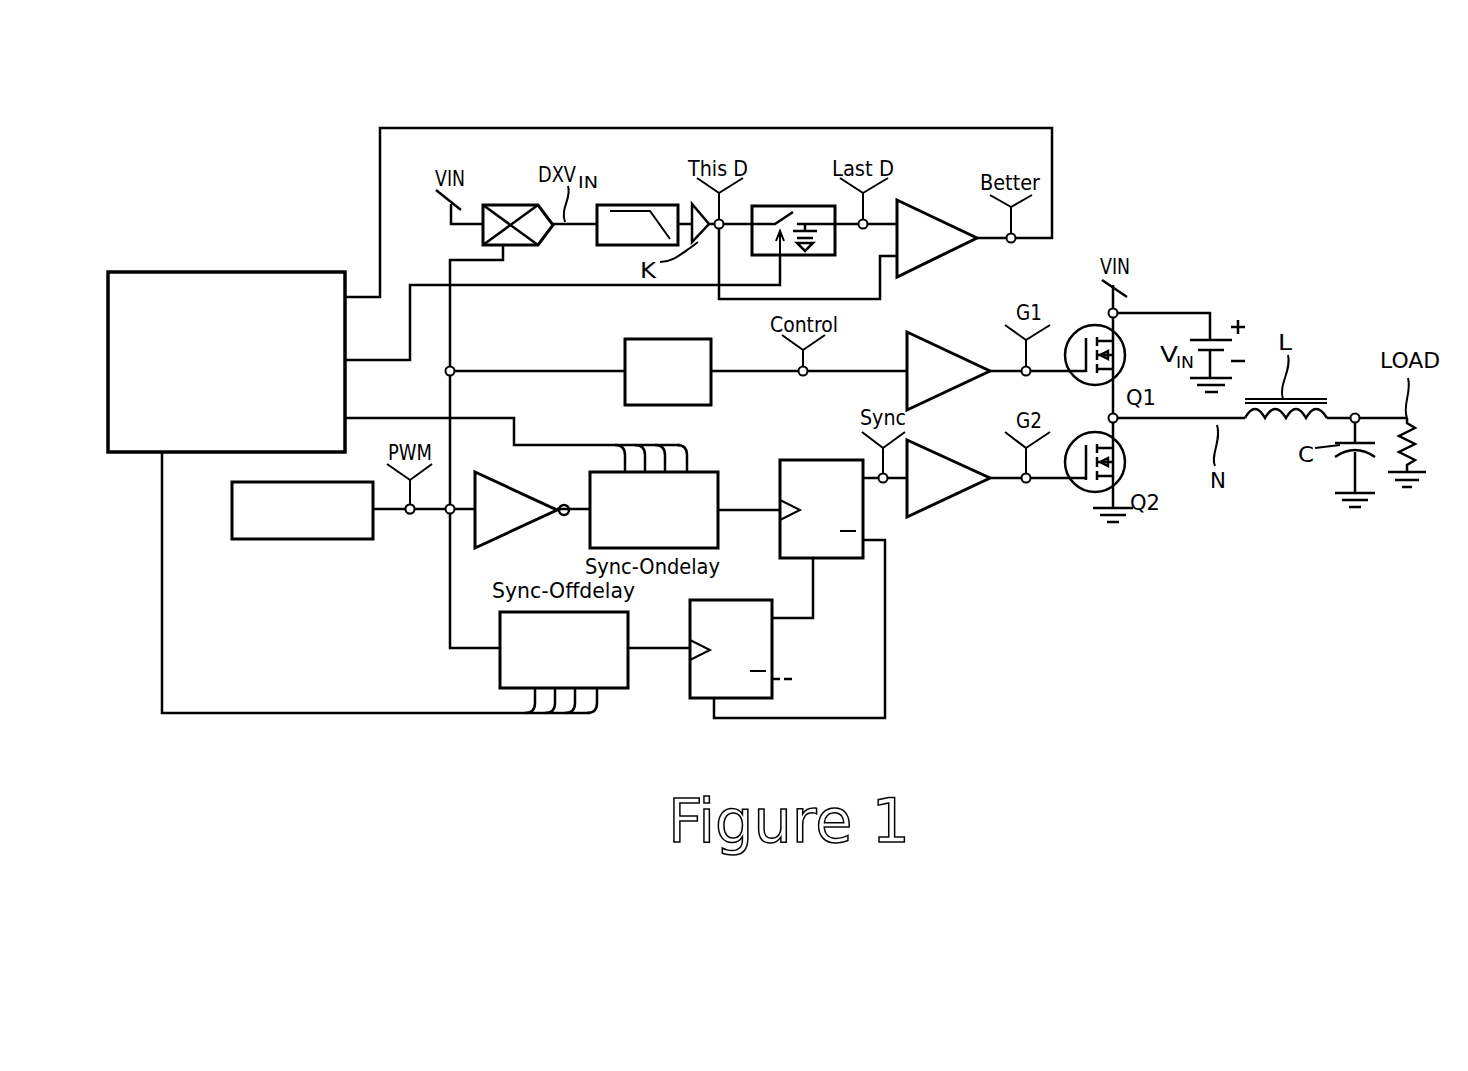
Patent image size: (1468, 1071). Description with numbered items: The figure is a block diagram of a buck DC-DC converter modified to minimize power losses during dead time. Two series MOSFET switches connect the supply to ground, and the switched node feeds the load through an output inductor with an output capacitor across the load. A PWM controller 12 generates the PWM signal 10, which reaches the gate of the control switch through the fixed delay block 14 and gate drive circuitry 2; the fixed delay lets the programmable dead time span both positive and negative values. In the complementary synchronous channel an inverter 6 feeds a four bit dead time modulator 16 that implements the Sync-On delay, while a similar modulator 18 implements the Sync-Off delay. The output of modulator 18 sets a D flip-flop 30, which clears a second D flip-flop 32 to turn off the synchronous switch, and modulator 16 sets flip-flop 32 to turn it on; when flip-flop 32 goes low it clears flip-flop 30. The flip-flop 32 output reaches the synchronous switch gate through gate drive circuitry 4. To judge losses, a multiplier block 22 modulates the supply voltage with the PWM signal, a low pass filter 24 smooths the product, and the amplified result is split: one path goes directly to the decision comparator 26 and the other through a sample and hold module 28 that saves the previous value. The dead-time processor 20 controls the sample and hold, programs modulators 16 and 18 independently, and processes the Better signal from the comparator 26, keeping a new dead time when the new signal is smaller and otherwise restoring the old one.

The gate drive circuitry 2 is at (949, 350).
The gate drive circuitry 4 is at (949, 460).
The inverter 6 is at (520, 530).
The PWM signal 10 is at (403, 515).
The PWM controller 12 is at (302, 540).
The fixed delay block 14 is at (625, 349).
The 4 bit dead time modulator 16 is at (706, 472).
The dead time modulator 18 is at (615, 690).
The dead-time processor 20 is at (226, 272).
The multiplier block 22 is at (507, 205).
The low pass filter 24 is at (623, 205).
The decision comparator 26 is at (932, 208).
The sample and hold module 28 is at (790, 206).
The D flip-flop 30 is at (773, 660).
The D flip-flop 32 is at (863, 527).